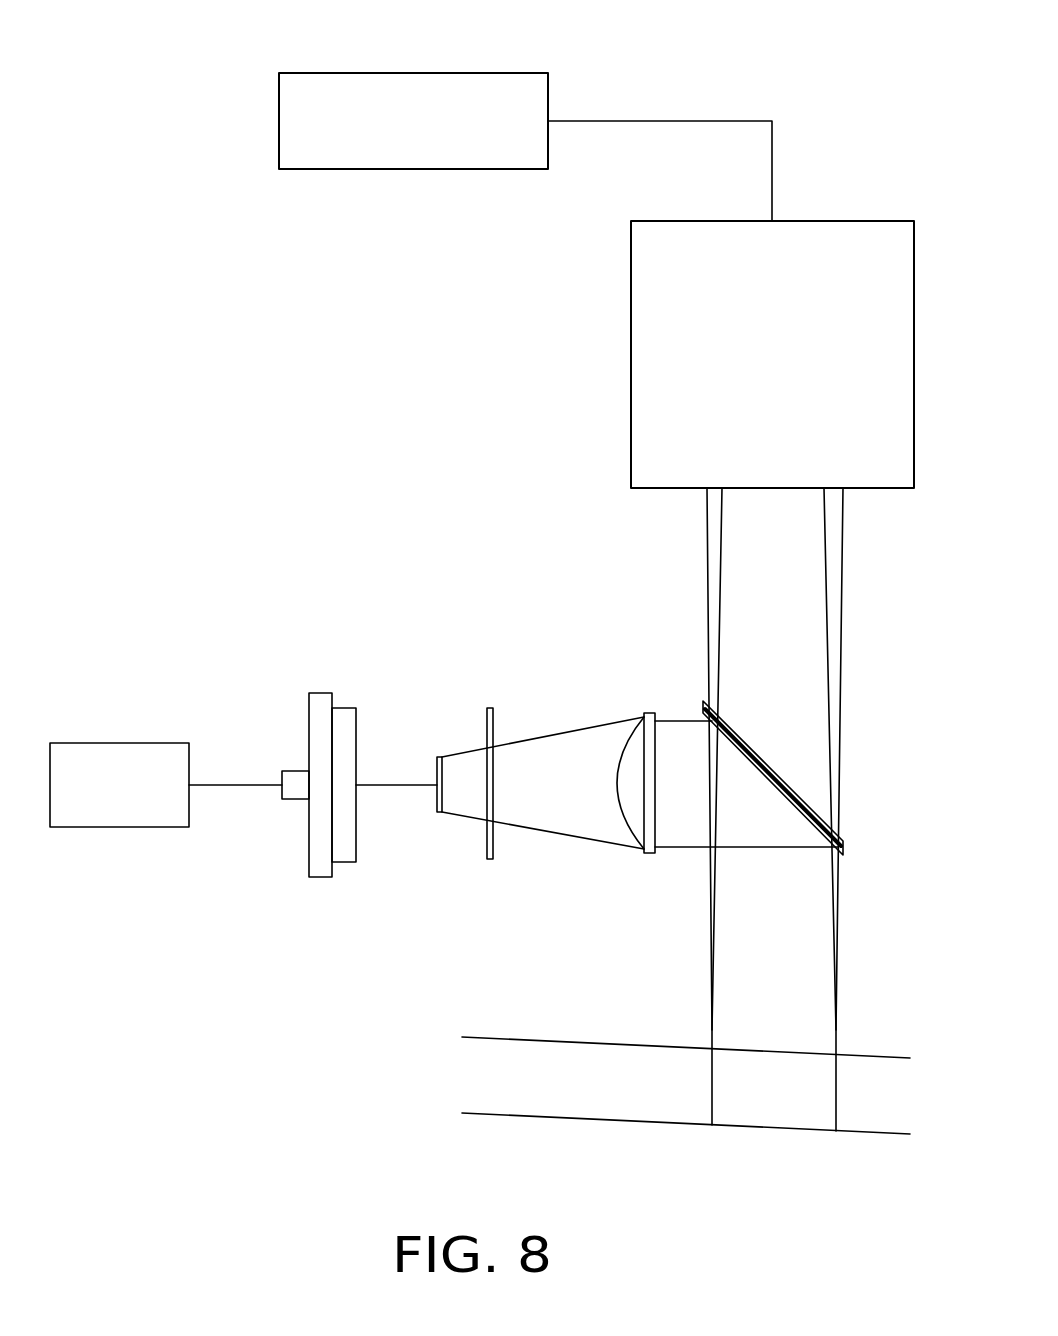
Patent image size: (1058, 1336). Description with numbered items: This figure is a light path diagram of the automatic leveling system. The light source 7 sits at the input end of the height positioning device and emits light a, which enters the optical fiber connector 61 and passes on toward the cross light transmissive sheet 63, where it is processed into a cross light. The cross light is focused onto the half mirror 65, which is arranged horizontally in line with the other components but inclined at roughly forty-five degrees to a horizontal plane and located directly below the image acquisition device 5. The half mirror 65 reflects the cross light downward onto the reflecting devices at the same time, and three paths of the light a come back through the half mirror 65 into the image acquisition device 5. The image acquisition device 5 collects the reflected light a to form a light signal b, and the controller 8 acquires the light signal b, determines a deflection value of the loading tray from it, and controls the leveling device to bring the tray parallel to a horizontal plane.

The controller 8 is at (388, 97).
The light signal b is at (675, 120).
The image acquisition device 5 is at (842, 262).
The light source 7 is at (108, 765).
The optical fiber connector 61 is at (315, 708).
The light a is at (387, 783).
The cross light transmissive sheet 63 is at (492, 727).
The half mirror 65 is at (772, 775).